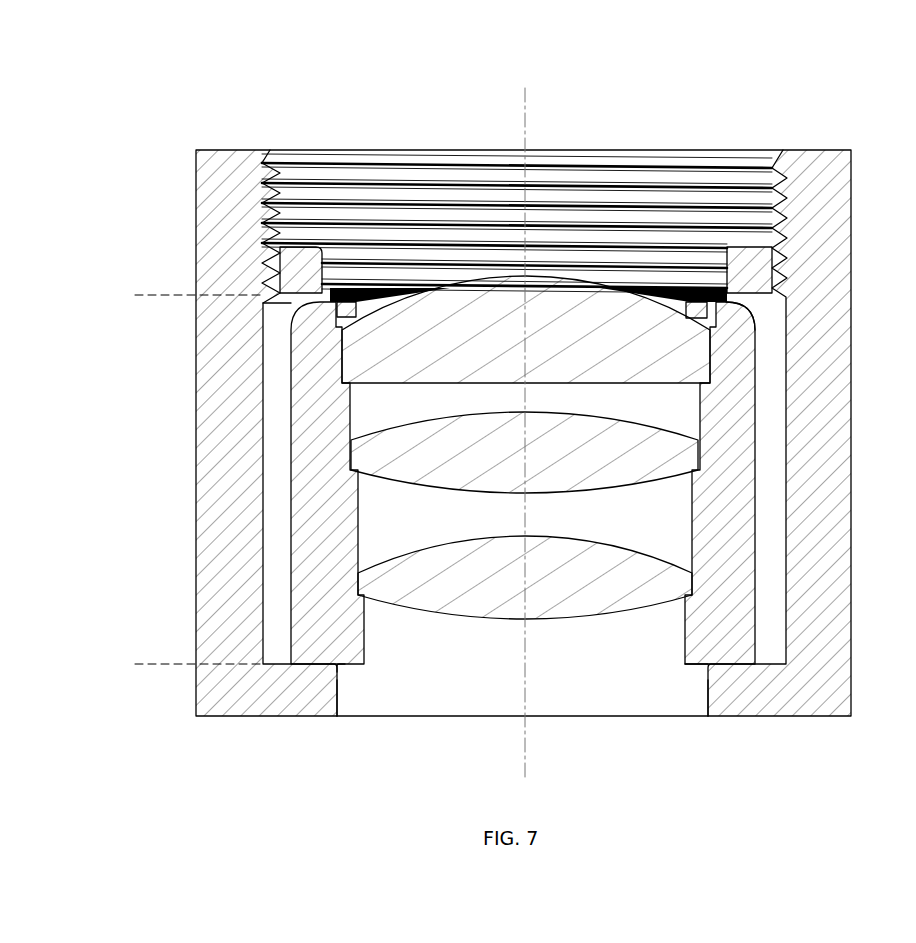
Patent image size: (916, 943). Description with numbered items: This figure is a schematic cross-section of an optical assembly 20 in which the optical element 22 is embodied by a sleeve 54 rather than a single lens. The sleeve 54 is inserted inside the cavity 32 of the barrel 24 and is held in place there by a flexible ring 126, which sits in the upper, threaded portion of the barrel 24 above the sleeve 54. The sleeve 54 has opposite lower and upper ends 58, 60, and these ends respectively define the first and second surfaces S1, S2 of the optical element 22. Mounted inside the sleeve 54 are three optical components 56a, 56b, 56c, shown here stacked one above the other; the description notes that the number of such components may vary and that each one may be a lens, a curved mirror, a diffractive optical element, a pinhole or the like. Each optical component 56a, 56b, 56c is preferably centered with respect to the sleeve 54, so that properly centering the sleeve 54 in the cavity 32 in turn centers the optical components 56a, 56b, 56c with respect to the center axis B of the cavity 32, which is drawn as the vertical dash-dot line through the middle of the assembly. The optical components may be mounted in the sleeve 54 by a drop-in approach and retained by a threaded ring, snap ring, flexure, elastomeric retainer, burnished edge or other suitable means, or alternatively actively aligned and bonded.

The optical assembly 20 is at (837, 103).
The optical element 22 is at (132, 295).
The barrel 24 is at (813, 720).
The cavity 32 is at (376, 708).
The sleeve 54 is at (352, 644).
The optical component 56a is at (620, 602).
The optical component 56b is at (617, 474).
The optical component 56c is at (620, 368).
The lower end 58 is at (349, 670).
The upper end 60 is at (711, 282).
The flexible ring 126 is at (262, 272).
The center axis B is at (526, 122).
The first surface S1 is at (692, 668).
The second surface S2 is at (757, 313).